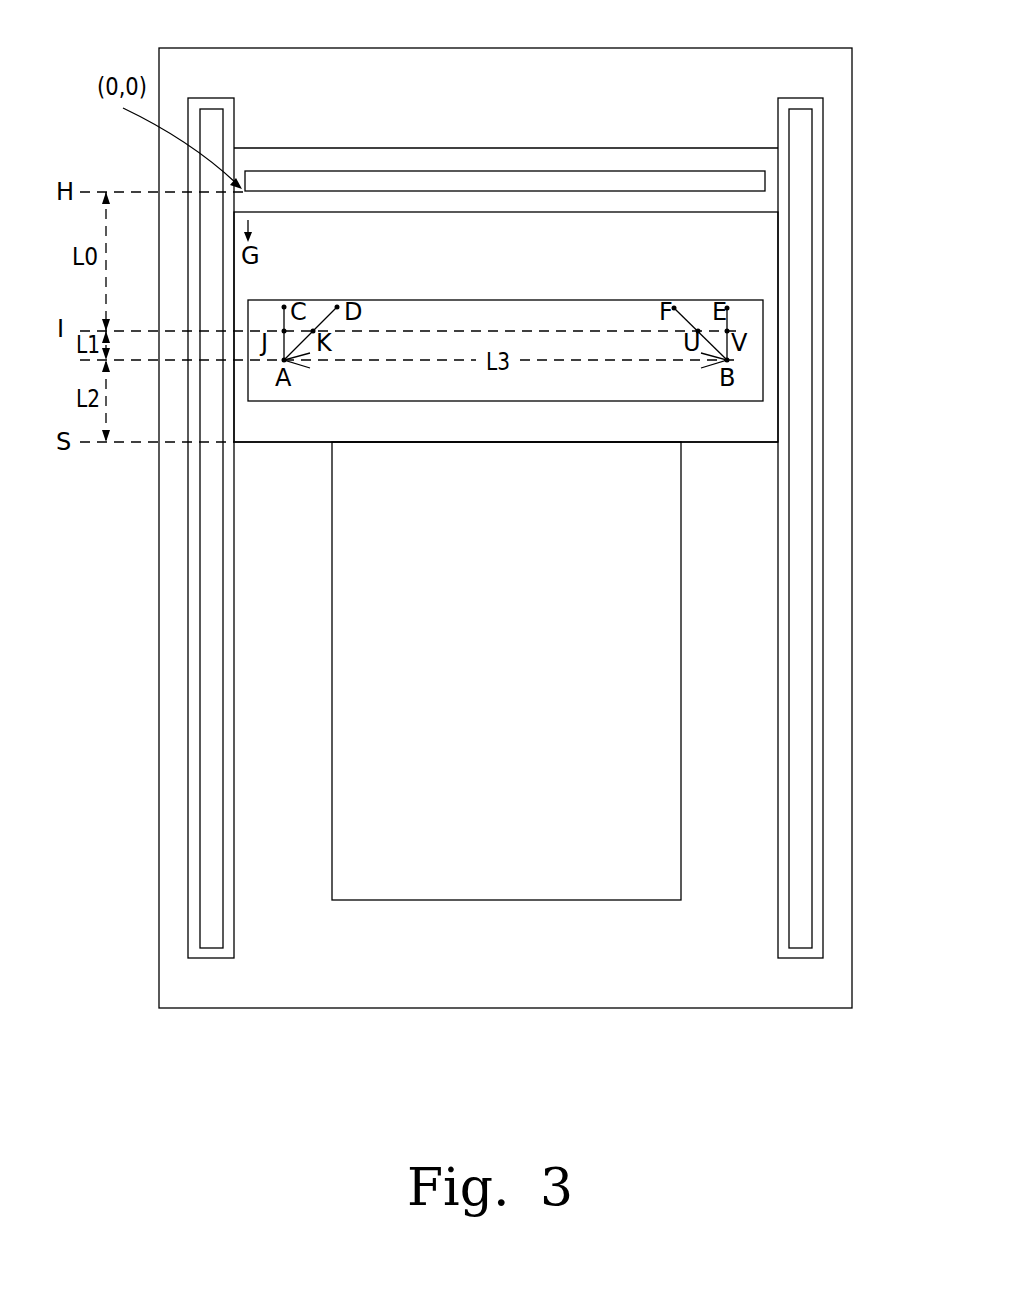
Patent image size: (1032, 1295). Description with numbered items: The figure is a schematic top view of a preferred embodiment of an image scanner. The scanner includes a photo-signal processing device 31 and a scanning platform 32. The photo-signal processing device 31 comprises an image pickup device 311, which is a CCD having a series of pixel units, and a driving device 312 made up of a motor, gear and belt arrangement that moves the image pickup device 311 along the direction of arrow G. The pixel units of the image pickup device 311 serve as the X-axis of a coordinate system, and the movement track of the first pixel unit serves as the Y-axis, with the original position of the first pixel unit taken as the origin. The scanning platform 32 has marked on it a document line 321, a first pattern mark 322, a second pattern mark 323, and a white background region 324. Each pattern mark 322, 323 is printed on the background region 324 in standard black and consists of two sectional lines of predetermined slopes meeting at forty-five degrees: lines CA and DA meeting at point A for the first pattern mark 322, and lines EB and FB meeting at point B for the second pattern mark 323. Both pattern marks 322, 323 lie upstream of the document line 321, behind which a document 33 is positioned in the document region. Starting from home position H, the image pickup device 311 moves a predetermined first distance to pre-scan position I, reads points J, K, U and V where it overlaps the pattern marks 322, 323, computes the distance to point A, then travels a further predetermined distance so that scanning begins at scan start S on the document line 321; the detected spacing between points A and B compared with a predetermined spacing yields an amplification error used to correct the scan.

The photo-signal processing device 31 is at (489, 160).
The image pickup device 311 is at (752, 181).
The driving device 312 is at (213, 740).
The scanning platform 32 is at (825, 278).
The document line 321 is at (711, 442).
The first pattern mark 322 is at (284, 320).
The second pattern mark 323 is at (729, 325).
The background region 324 is at (488, 312).
The document 33 is at (648, 705).